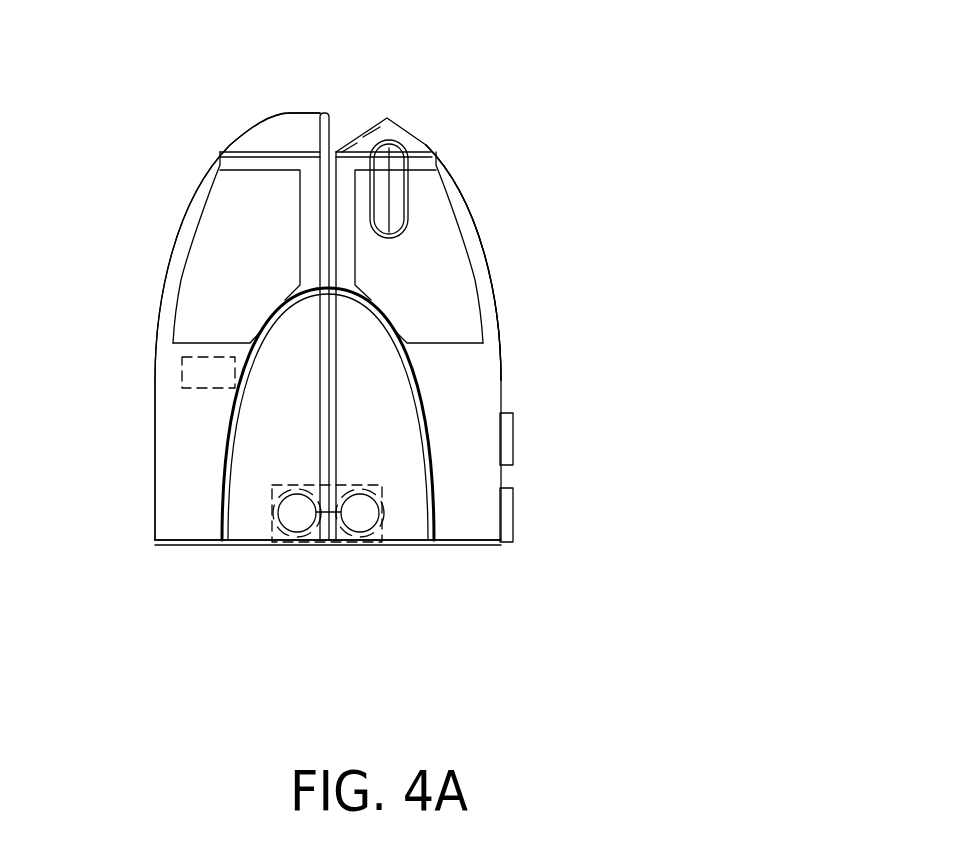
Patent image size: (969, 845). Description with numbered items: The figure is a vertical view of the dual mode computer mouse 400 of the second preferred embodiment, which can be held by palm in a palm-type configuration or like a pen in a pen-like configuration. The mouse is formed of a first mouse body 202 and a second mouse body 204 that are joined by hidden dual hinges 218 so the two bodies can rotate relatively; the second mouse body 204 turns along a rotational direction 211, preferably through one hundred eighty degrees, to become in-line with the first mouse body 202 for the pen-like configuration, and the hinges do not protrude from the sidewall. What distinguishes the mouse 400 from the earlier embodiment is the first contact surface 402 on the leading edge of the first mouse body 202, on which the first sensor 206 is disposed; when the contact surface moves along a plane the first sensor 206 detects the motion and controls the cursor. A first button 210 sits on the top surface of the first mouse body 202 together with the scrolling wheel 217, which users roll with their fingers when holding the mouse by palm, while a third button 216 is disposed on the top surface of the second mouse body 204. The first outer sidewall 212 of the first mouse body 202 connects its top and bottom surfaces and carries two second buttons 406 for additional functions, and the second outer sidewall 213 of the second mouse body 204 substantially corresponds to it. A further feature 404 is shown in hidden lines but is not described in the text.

The dual mode computer mouse 400 is at (655, 135).
The first mouse body 202 is at (448, 149).
The second mouse body 204 is at (190, 173).
The first sensor 206 is at (360, 135).
The first button 210 is at (473, 312).
The rotational direction 211 is at (182, 555).
The first outer sidewall 212 is at (483, 259).
The second outer sidewall 213 is at (153, 507).
The third button 216 is at (193, 288).
The scrolling wheel 217 is at (400, 147).
The hidden dual hinges 218 is at (293, 523).
The first contact surface 402 is at (384, 120).
The hidden button 404 is at (180, 366).
The second buttons 406 is at (508, 448).